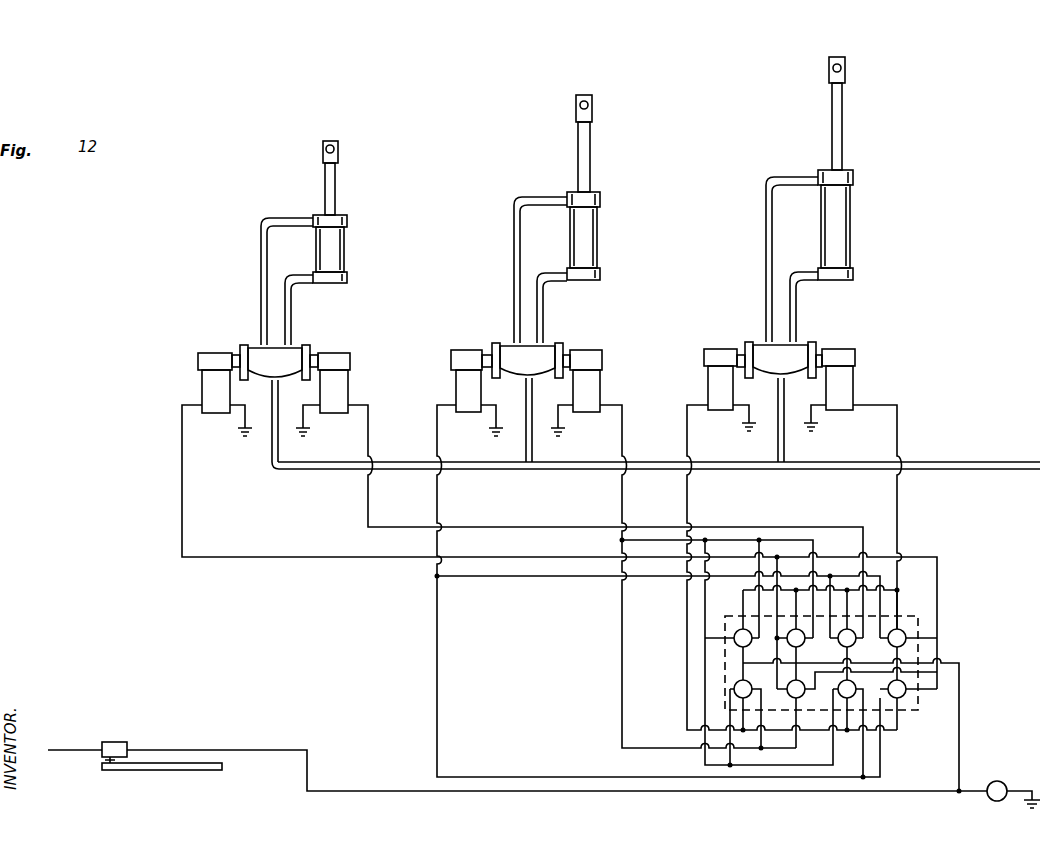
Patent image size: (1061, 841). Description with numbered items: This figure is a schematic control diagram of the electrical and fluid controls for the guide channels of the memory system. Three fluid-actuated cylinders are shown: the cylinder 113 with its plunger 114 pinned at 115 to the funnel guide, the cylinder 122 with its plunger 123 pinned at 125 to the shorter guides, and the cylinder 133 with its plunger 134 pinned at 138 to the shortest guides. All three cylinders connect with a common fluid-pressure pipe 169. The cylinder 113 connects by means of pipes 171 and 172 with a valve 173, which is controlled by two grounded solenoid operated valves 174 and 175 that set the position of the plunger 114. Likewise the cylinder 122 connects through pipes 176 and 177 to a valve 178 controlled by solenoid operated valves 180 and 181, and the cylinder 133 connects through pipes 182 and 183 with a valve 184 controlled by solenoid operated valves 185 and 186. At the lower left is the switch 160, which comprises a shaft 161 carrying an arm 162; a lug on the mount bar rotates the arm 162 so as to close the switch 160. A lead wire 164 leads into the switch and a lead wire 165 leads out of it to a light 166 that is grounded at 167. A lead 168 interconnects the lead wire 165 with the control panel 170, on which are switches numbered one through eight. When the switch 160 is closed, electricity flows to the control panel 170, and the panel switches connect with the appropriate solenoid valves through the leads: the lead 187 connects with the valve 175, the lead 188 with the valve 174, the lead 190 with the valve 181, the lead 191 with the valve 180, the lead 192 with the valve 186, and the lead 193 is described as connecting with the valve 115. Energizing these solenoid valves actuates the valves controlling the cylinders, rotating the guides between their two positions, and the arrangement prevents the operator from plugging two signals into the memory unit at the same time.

The fluid actuated cylinder 113 is at (836, 235).
The plunger 114 is at (842, 125).
The pin 115 is at (846, 69).
The fluid-actuated cylinder 122 is at (587, 236).
The plunger 123 is at (590, 156).
The pin 125 is at (593, 107).
The fluid-actuated cylinder 133 is at (341, 247).
The plunger 134 is at (336, 188).
The pin 138 is at (339, 150).
The switch 160 is at (113, 742).
The shaft 161 is at (102, 762).
The arm 162 is at (200, 770).
The lead wire 164 is at (57, 745).
The lead wire 165 is at (183, 748).
The light 166 is at (1000, 784).
The ground 167 is at (1033, 799).
The lead 168 is at (961, 694).
The fluid-pressure pipe 169 is at (975, 462).
The control panel 170 is at (918, 704).
The pipe 171 is at (769, 230).
The pipe 172 is at (797, 314).
The valve 173 is at (780, 402).
The solenoid operated valve 174 is at (712, 384).
The solenoid operated valve 175 is at (851, 382).
The pipe 176 is at (516, 242).
The pipe 177 is at (544, 313).
The valve 178 is at (527, 402).
The solenoid operated valve 180 is at (458, 381).
The solenoid operated valve 181 is at (592, 382).
The pipe 182 is at (262, 262).
The pipe 183 is at (290, 315).
The valve 184 is at (275, 407).
The solenoid operated valve 185 is at (200, 382).
The solenoid operated valve 186 is at (343, 382).
The lead 187 is at (898, 445).
The lead 188 is at (689, 455).
The lead 190 is at (623, 702).
The lead 191 is at (438, 624).
The lead 192 is at (486, 527).
The lead 193 is at (226, 558).